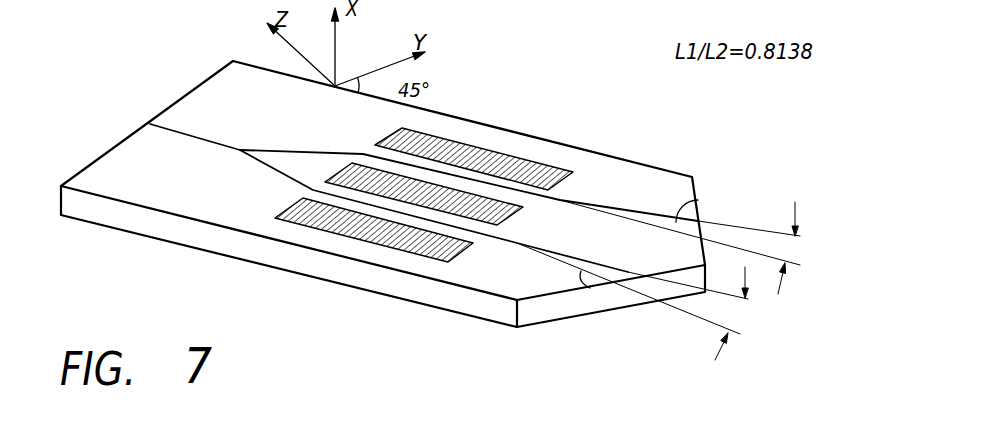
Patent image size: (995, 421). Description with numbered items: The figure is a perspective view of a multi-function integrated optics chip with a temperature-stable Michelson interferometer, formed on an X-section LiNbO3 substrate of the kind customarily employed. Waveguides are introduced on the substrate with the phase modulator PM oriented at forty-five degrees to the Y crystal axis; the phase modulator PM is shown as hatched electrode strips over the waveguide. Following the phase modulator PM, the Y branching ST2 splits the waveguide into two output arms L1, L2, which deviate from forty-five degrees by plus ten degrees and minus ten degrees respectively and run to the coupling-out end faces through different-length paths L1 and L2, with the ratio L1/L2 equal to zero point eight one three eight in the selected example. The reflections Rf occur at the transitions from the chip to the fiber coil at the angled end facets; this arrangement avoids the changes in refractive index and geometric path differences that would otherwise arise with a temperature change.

The lithium niobate substrate LiNbO3 is at (496, 140).
The second beam splitter ST2 is at (240, 150).
The phase modulator PM is at (350, 240).
The first output arm path L1 is at (617, 210).
The second output arm path L2 is at (540, 258).
The reflections Rf is at (700, 210).